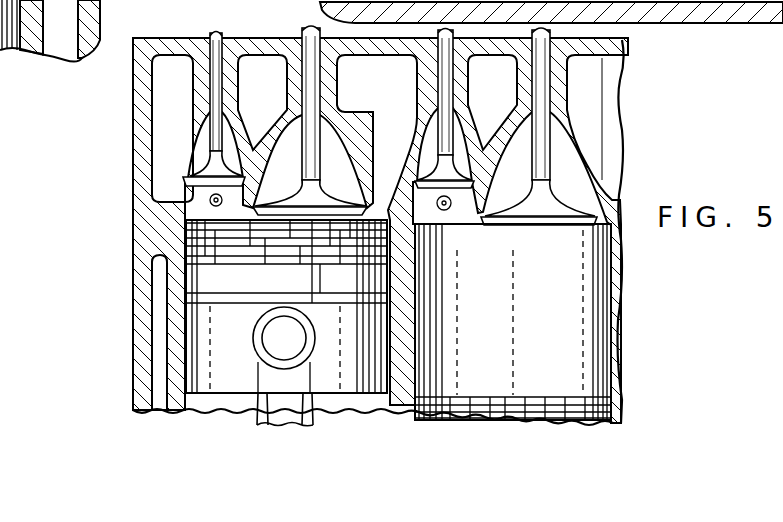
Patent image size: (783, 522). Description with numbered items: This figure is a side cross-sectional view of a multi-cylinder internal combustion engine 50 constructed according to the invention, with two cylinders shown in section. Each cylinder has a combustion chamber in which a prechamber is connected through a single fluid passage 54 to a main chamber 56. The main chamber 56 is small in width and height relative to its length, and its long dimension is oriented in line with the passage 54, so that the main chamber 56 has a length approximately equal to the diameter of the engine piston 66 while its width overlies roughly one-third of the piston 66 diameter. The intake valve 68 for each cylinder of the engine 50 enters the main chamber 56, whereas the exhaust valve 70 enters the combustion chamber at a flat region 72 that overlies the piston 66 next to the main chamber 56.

The multi-cylinder internal combustion engine 50 is at (108, 203).
The fluid passage 54 is at (209, 200).
The main chamber 56 is at (198, 208).
The engine piston 66 is at (295, 287).
The intake valve 68 is at (188, 130).
The exhaust valve 70 is at (330, 197).
The flat region 72 is at (286, 261).